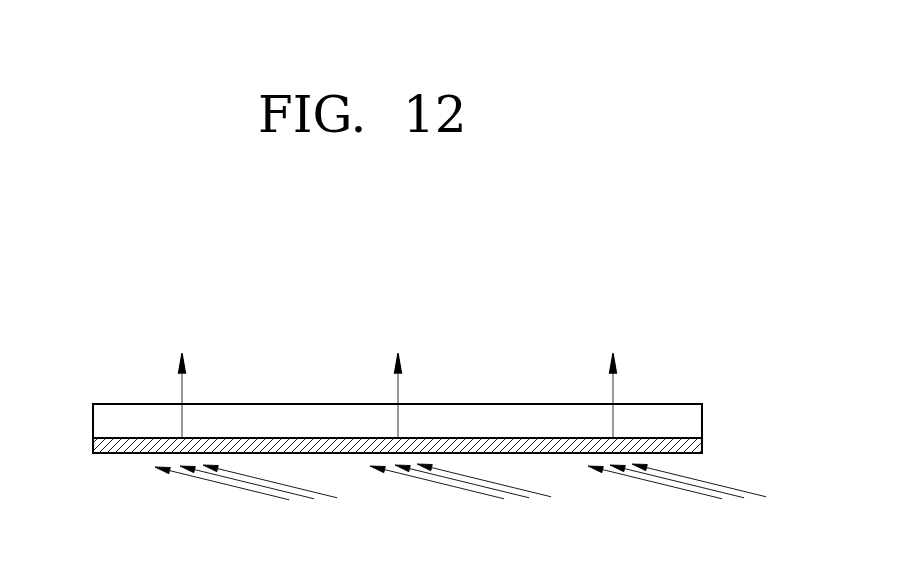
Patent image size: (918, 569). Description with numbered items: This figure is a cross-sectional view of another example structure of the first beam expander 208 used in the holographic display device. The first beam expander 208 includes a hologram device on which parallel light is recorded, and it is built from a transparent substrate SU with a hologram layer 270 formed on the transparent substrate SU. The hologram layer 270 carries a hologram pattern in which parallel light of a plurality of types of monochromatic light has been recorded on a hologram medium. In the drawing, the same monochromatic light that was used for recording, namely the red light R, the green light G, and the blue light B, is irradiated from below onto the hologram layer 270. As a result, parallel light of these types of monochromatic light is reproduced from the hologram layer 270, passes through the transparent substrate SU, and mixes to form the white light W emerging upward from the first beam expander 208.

The first beam expander 208 is at (400, 367).
The transparent substrate SU is at (92, 418).
The hologram layer 270 is at (92, 445).
The white light W is at (398, 380).
The blue light B is at (438, 496).
The green light G is at (462, 494).
The red light R is at (484, 490).